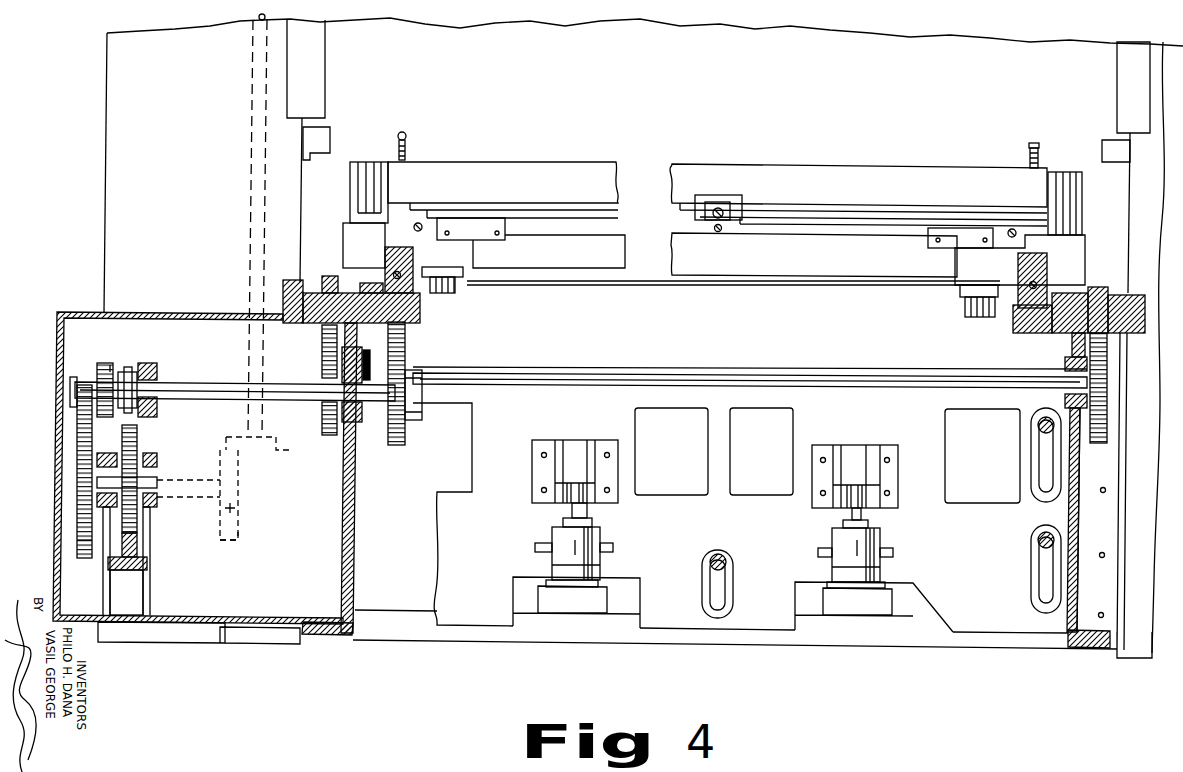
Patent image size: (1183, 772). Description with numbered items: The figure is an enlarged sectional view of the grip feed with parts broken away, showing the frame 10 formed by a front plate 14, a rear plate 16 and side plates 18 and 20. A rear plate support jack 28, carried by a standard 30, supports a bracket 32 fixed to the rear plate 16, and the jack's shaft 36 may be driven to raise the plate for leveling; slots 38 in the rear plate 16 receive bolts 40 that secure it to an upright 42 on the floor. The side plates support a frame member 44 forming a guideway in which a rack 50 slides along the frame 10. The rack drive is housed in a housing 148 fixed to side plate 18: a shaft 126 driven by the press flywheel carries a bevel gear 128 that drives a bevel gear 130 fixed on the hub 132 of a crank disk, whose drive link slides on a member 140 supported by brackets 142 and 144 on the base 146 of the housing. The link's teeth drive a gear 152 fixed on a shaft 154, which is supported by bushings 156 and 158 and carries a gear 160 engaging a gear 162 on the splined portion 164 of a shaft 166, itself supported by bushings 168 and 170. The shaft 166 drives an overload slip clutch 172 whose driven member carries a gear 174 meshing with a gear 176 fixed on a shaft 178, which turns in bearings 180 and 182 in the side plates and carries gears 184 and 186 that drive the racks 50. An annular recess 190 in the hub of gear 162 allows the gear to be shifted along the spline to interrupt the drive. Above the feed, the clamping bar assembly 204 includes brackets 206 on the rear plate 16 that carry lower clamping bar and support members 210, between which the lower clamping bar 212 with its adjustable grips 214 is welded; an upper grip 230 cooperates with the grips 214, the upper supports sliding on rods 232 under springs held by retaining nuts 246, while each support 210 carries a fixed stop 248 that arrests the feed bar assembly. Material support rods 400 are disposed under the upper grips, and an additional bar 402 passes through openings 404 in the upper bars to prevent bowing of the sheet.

The frame 10 is at (93, 222).
The front plate 14 is at (443, 275).
The rear plate 16 is at (968, 630).
The side plate 18 is at (357, 470).
The side plate 20 is at (1080, 490).
The rear plate support jack 28 is at (601, 565).
The standard 30 is at (535, 578).
The bracket 32 is at (580, 442).
The shaft 36 is at (613, 548).
The slot 38 is at (708, 606).
The bolt 40 is at (726, 565).
The upright 42 is at (398, 587).
The frame member 44 is at (1128, 336).
The rack 50 is at (315, 288).
The shaft 126 is at (250, 163).
The bevel gear 128 is at (278, 452).
The bevel gear 130 is at (243, 538).
The hub 132 is at (248, 506).
The member 140 is at (150, 570).
The bracket 142 is at (103, 592).
The bracket 144 is at (152, 604).
The base 146 is at (220, 640).
The housing 148 is at (53, 462).
The gear 152 is at (142, 528).
The shaft 154 is at (160, 478).
The bushing 156 is at (82, 502).
The bushing 158 is at (160, 500).
The gear 160 is at (78, 538).
The gear 162 is at (107, 362).
The splined portion 164 is at (97, 375).
The shaft 166 is at (203, 400).
The bushing 168 is at (160, 368).
The bushing 170 is at (342, 374).
The overload slip clutch 172 is at (418, 430).
The gear 174 is at (392, 445).
The gear 176 is at (407, 333).
The shaft 178 is at (660, 366).
The bearing 180 is at (405, 347).
The bearing 182 is at (1066, 364).
The gear 184 is at (322, 350).
The gear 186 is at (1072, 347).
The annular recess 190 is at (120, 368).
The clamping bar assembly 204 is at (833, 165).
The bracket 206 is at (465, 285).
The lower clamping bar and support member 210 is at (455, 272).
The lower clamping bar 212 is at (780, 275).
The grip 214 is at (467, 218).
The grip 230 is at (935, 218).
The rod 232 is at (420, 232).
The retaining nut 246 is at (408, 137).
The fixed stop 248 is at (375, 257).
The material support rod 400 is at (422, 222).
The bar 402 is at (720, 210).
The opening 404 is at (740, 216).